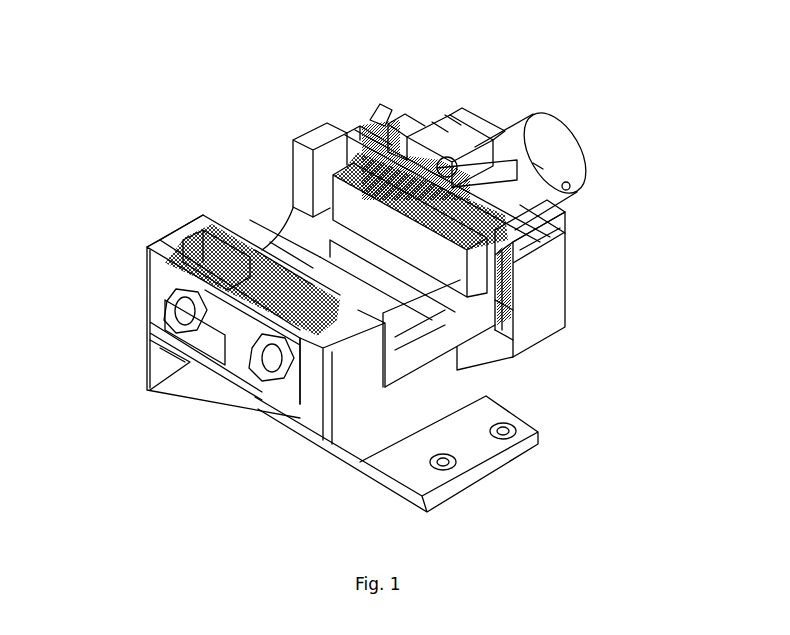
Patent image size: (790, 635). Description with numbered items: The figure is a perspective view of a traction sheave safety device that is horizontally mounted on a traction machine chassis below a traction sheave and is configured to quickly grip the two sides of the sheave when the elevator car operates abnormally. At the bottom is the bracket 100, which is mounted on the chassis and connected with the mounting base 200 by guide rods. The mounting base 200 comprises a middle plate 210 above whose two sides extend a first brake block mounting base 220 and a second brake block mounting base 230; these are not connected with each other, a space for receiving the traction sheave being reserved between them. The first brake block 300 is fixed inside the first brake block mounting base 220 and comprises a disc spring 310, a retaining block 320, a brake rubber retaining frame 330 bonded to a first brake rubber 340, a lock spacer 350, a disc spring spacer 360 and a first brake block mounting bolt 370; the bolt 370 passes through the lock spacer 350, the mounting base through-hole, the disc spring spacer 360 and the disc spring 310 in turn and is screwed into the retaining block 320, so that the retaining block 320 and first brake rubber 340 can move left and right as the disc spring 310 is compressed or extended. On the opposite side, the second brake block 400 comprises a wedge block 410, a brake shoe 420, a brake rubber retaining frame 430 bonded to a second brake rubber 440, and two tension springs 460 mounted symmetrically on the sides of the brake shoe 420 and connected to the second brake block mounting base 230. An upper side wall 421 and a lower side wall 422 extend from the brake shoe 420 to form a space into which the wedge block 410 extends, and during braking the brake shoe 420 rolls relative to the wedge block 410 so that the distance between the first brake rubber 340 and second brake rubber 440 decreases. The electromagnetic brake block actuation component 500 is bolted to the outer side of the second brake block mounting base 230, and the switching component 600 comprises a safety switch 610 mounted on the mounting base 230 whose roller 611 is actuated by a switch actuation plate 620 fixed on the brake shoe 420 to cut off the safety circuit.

The bracket 100 is at (443, 447).
The mounting base 200 is at (445, 365).
The middle plate 210 is at (530, 373).
The first brake block mounting base 220 is at (312, 430).
The second brake block mounting base 230 is at (535, 272).
The first brake block 300 is at (194, 312).
The disc spring 310 is at (165, 278).
The retaining block 320 is at (192, 335).
The brake rubber retaining frame 330 is at (190, 226).
The first brake rubber 340 is at (230, 217).
The lock spacer 350 is at (200, 372).
The disc spring spacer 360 is at (200, 312).
The first brake block mounting bolt 370 is at (266, 372).
The second brake block 400 is at (409, 190).
The wedge block 410 is at (387, 105).
The brake shoe 420 is at (345, 115).
The upper side wall 421 is at (520, 243).
The lower side wall 422 is at (545, 320).
The brake rubber retaining frame 430 is at (312, 130).
The second brake rubber 440 is at (298, 170).
The tension springs 460 is at (565, 215).
The brake block actuation component 500 is at (535, 163).
The switching component 600 is at (507, 103).
The safety switch 610 is at (462, 110).
The roller 611 is at (441, 112).
The switch actuation plate 620 is at (397, 110).